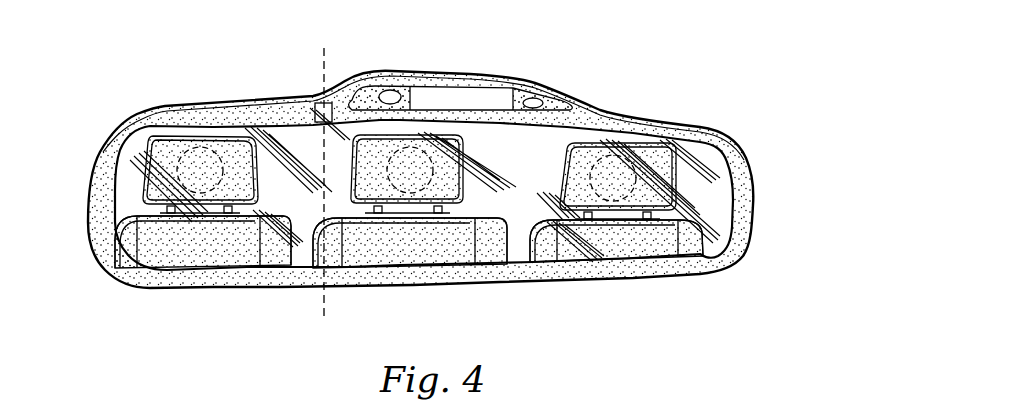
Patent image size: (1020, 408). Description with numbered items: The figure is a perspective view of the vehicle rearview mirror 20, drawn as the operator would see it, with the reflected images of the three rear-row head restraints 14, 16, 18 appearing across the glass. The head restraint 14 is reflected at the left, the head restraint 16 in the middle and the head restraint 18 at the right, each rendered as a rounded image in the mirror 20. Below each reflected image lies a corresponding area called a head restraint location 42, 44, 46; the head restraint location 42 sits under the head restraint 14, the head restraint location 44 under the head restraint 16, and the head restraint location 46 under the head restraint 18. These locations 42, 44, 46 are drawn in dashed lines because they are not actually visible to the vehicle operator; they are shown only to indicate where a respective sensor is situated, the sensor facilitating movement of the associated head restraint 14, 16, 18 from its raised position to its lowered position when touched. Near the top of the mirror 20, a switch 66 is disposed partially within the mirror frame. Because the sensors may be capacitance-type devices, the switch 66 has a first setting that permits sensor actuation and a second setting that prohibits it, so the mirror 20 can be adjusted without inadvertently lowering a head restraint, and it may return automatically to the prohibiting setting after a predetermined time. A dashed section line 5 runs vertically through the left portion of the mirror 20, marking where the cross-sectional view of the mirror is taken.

The rearview mirror 20 is at (76, 136).
The head restraint 14 is at (190, 136).
The head restraint 16 is at (417, 134).
The head restraint 18 is at (627, 144).
The head restraint location 42 is at (197, 230).
The head restraint location 44 is at (430, 265).
The head restraint location 46 is at (640, 258).
The switch 66 is at (353, 102).
The section line 5- 5 is at (324, 48).